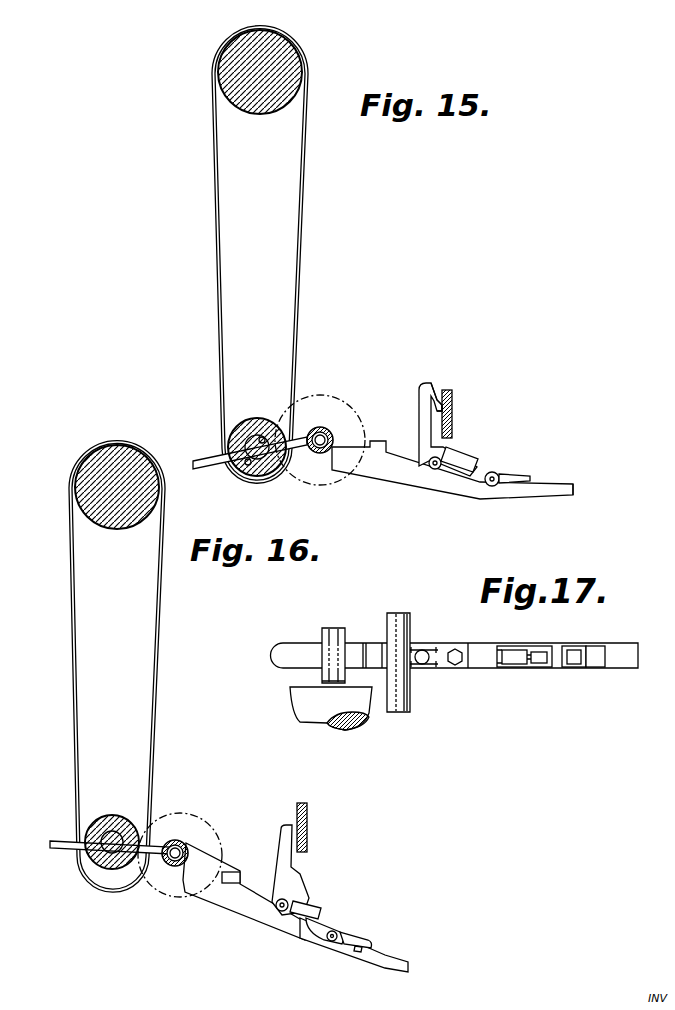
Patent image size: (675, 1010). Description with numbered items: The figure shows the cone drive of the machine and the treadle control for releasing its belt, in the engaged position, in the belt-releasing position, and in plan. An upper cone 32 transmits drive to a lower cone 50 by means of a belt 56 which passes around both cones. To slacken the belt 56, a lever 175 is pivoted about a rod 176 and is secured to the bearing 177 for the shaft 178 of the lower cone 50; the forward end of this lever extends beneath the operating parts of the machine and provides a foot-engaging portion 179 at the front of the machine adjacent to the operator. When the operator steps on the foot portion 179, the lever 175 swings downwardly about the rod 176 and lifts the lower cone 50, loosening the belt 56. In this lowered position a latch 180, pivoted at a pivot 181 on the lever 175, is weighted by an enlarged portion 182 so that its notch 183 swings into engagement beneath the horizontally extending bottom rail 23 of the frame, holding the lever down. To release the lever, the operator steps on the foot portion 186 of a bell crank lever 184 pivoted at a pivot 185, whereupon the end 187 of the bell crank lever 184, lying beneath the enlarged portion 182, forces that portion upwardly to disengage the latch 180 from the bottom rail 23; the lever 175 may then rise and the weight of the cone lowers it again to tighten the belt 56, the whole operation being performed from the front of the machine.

In FIG. 15, the upper cone 32 is at (238, 85).
In FIG. 16, the upper cone 32 is at (95, 512).
In FIG. 15, the belt 56 is at (303, 273).
In FIG. 16, the belt 56 is at (152, 684).
In FIG. 15, the lower cone 50 is at (232, 437).
In FIG. 16, the lower cone 50 is at (86, 826).
In FIG. 17, the lower cone 50 is at (300, 710).
In FIG. 15, the lever 175 is at (376, 472).
In FIG. 16, the lever 175 is at (262, 912).
In FIG. 17, the lever 175 is at (485, 643).
In FIG. 15, the rod 176 is at (328, 433).
In FIG. 16, the rod 176 is at (184, 847).
In FIG. 17, the rod 176 is at (412, 705).
In FIG. 15, the bearing 177 is at (246, 468).
In FIG. 15, the shaft 178 is at (262, 432).
In FIG. 15, the foot-engaging portion 179 is at (560, 492).
In FIG. 15, the latch 180 is at (428, 442).
In FIG. 16, the latch 180 is at (282, 858).
In FIG. 15, the pivot 181 is at (436, 471).
In FIG. 15, the enlarged portion 182 is at (470, 458).
In FIG. 16, the enlarged portion 182 is at (306, 904).
In FIG. 17, the enlarged portion 182 is at (542, 670).
In FIG. 15, the notch 183 is at (441, 396).
In FIG. 16, the bell crank lever 184 is at (347, 935).
In FIG. 16, the pivot 185 is at (335, 929).
In FIG. 16, the foot portion 186 is at (372, 943).
In FIG. 17, the foot portion 186 is at (597, 670).
In FIG. 16, the end 187 is at (302, 938).
In FIG. 15, the bottom rail 23 is at (455, 410).
In FIG. 16, the bottom rail 23 is at (308, 830).